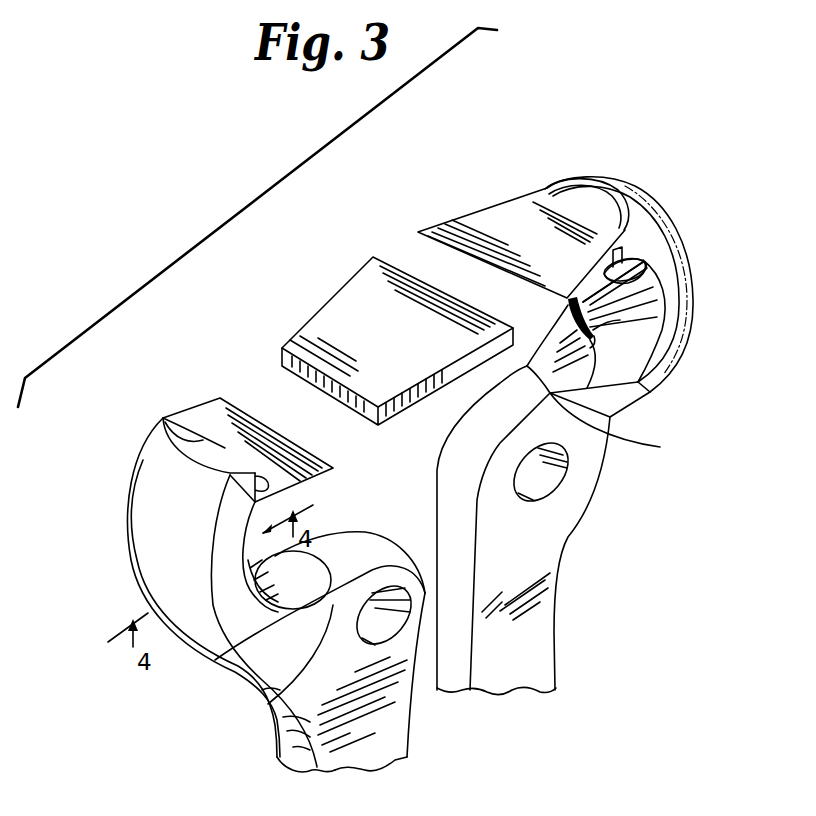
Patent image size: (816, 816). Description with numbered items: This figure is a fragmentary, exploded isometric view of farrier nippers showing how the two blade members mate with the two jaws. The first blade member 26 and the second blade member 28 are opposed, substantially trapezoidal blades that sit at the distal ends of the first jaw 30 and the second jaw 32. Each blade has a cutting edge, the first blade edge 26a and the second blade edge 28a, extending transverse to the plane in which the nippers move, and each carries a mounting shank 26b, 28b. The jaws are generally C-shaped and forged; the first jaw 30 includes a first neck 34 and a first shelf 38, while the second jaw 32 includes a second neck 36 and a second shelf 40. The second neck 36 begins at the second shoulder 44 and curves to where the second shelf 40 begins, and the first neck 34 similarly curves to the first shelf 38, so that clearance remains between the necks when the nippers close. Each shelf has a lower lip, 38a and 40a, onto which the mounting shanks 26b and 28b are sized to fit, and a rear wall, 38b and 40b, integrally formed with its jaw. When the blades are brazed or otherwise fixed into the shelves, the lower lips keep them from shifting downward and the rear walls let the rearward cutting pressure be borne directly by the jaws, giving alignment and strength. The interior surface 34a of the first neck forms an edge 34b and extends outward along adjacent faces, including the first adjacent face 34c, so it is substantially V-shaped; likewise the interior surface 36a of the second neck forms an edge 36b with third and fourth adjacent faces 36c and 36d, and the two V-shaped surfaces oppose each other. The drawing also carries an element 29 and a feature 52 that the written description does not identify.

The first blade member 26 is at (313, 297).
The first blade edge 26a is at (408, 267).
The mounting shank 26b is at (285, 324).
The second blade member 28 is at (466, 203).
The second blade edge 28a is at (445, 243).
The mounting shank 28b is at (509, 197).
The rib 29 is at (644, 257).
The first jaw 30 is at (128, 553).
The second jaw 32 is at (700, 297).
The first neck 34 is at (140, 583).
The interior surface 34a is at (317, 493).
The edge 34b is at (268, 704).
The first adjacent face 34c is at (284, 600).
The second neck 36 is at (694, 257).
The interior surface 36a is at (467, 407).
The edge 36b is at (654, 280).
The third adjacent face 36c is at (644, 333).
The fourth adjacent face 36d is at (660, 447).
The first shelf 38 is at (163, 423).
The lower lip 38a is at (223, 397).
The rear wall 38b is at (230, 475).
The second shelf 40 is at (585, 206).
The lower lip 40a is at (633, 257).
The rear wall 40b is at (545, 202).
The second shoulder 44 is at (647, 392).
The hole 52 is at (560, 490).